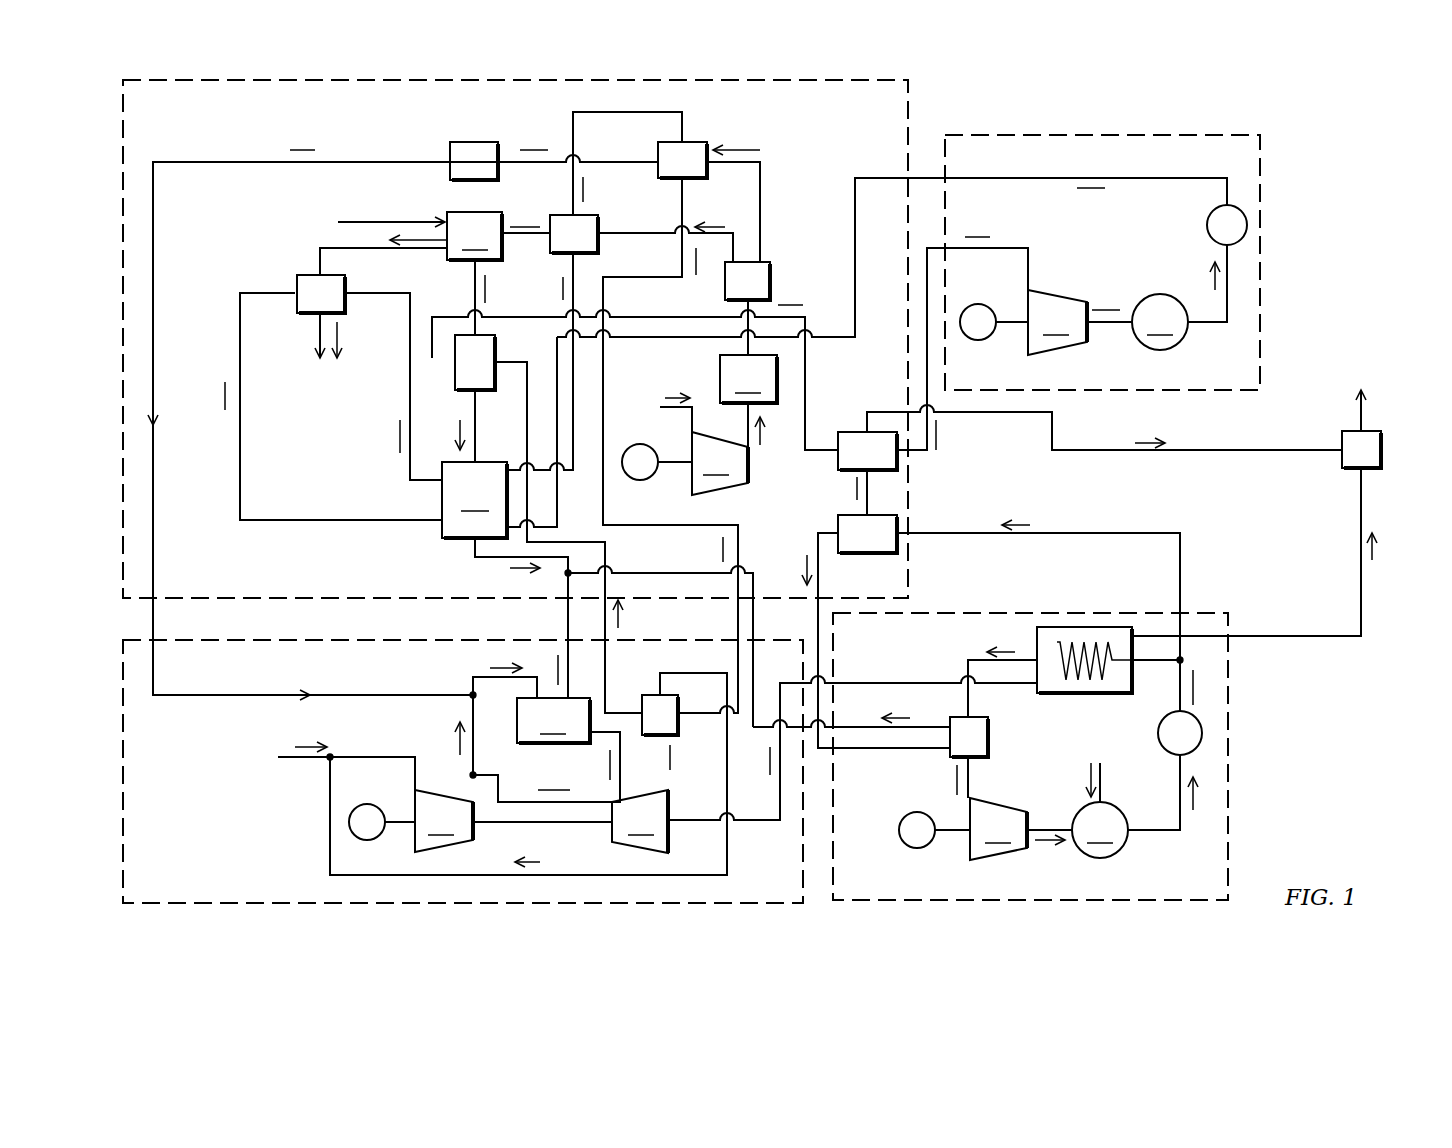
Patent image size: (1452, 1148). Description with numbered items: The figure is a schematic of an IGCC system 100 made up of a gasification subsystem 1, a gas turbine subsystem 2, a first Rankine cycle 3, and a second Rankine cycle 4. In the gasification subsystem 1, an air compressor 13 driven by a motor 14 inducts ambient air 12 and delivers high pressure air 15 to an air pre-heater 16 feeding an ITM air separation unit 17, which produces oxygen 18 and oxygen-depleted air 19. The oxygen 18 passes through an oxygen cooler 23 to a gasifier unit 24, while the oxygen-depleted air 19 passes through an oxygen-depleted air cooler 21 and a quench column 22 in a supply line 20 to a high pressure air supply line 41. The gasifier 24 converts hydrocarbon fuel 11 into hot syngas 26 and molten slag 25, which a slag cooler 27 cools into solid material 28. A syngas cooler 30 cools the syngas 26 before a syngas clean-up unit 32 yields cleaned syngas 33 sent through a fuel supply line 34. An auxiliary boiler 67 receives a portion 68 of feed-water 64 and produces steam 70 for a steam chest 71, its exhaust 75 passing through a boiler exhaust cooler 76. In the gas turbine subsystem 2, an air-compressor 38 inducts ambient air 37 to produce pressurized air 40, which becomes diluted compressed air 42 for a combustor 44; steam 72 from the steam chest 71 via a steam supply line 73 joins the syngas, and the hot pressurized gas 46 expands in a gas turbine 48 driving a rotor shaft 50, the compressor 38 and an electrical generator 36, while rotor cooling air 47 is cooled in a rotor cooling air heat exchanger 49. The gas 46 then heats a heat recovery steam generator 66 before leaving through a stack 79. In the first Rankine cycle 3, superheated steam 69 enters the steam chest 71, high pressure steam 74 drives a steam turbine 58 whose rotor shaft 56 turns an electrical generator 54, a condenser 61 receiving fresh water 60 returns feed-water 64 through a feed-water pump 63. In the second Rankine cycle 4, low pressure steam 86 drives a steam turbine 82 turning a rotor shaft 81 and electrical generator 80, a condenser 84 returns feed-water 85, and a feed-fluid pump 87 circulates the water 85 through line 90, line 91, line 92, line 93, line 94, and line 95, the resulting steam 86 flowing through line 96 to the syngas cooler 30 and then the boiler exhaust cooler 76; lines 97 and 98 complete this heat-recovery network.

The gasification subsystem 1 is at (908, 115).
The gas turbine subsystem 2 is at (530, 905).
The first Rankine cycle 3 is at (1048, 903).
The second Rankine cycle 4 is at (1262, 160).
The hydrocarbon fuel 11 is at (352, 222).
The ambient air 12 is at (667, 398).
The air compressor 13 is at (720, 463).
The motor 14 is at (640, 480).
The high pressure air 15 is at (762, 430).
The air pre-heater 16 is at (748, 379).
The ITM air separation unit 17 is at (772, 267).
The oxygen 18 is at (533, 225).
The oxygen-depleted air 19 is at (312, 150).
The oxygen-depleted air supply line 20 is at (765, 215).
The oxygen-depleted air cooler 21 is at (658, 147).
The oxygen-depleted air quench column 22 is at (450, 175).
The oxygen cooler 23 is at (600, 250).
The gasifier unit 24 is at (474, 236).
The molten slag 25 is at (398, 241).
The syngas 26 is at (488, 290).
The slag cooler 27 is at (304, 275).
The solid material 28 is at (341, 332).
The syngas cooler 30 is at (497, 340).
The syngas clean-up unit 32 is at (474, 500).
The cleaned syngas 33 is at (510, 575).
The fuel supply line 34 is at (568, 627).
The electrical generator 36 is at (373, 805).
The ambient air 37 is at (555, 662).
The air-compressor 38 is at (444, 821).
The pressurized air 40 is at (455, 735).
The high pressure air supply line 41 is at (470, 772).
The diluted compressed air 42 is at (480, 668).
The combustor 44 is at (553, 720).
The hot pressurized gas 46 is at (605, 768).
The rotor cooling air 47 is at (545, 790).
The gas turbine 48 is at (640, 821).
The rotor cooling air heat exchanger 49 is at (648, 695).
The rotor shaft 50 is at (543, 822).
The electrical generator 54 is at (912, 813).
The rotor shaft 56 is at (917, 848).
The steam turbine 58 is at (998, 829).
The fresh water 60 is at (1088, 777).
The condenser 61 is at (1100, 810).
The feed-water pump 63 is at (1203, 736).
The feed-water 64 is at (1195, 695).
The heat recovery steam generator 66 is at (1088, 693).
The auxiliary boiler 67 is at (898, 546).
The portion of feed-water 68 is at (1022, 525).
The superheated steam 69 is at (1005, 652).
The steam 70 is at (807, 560).
The steam chest 71 is at (990, 724).
The steam 72 is at (851, 706).
The steam supply line 73 is at (755, 621).
The high pressure steam 74 is at (957, 780).
The exhaust 75 is at (857, 492).
The boiler exhaust cooler 76 is at (898, 468).
The stack 79 is at (1382, 436).
The electrical generator 80 is at (978, 340).
The rotor shaft 81 is at (1010, 318).
The steam turbine 82 is at (1080, 322).
The condenser 84 is at (1160, 322).
The feed-water 85 is at (586, 193).
The steam 86 is at (790, 305).
The feed-fluid pump 87 is at (1207, 229).
The line 90 is at (1045, 178).
The line 91 is at (240, 462).
The line 92 is at (410, 472).
The line 93 is at (575, 440).
The line 94 is at (620, 112).
The line 95 is at (680, 193).
The line 96 is at (607, 557).
The line 97 is at (610, 316).
The line 98 is at (1028, 250).
The IGCC system 100 is at (1338, 228).